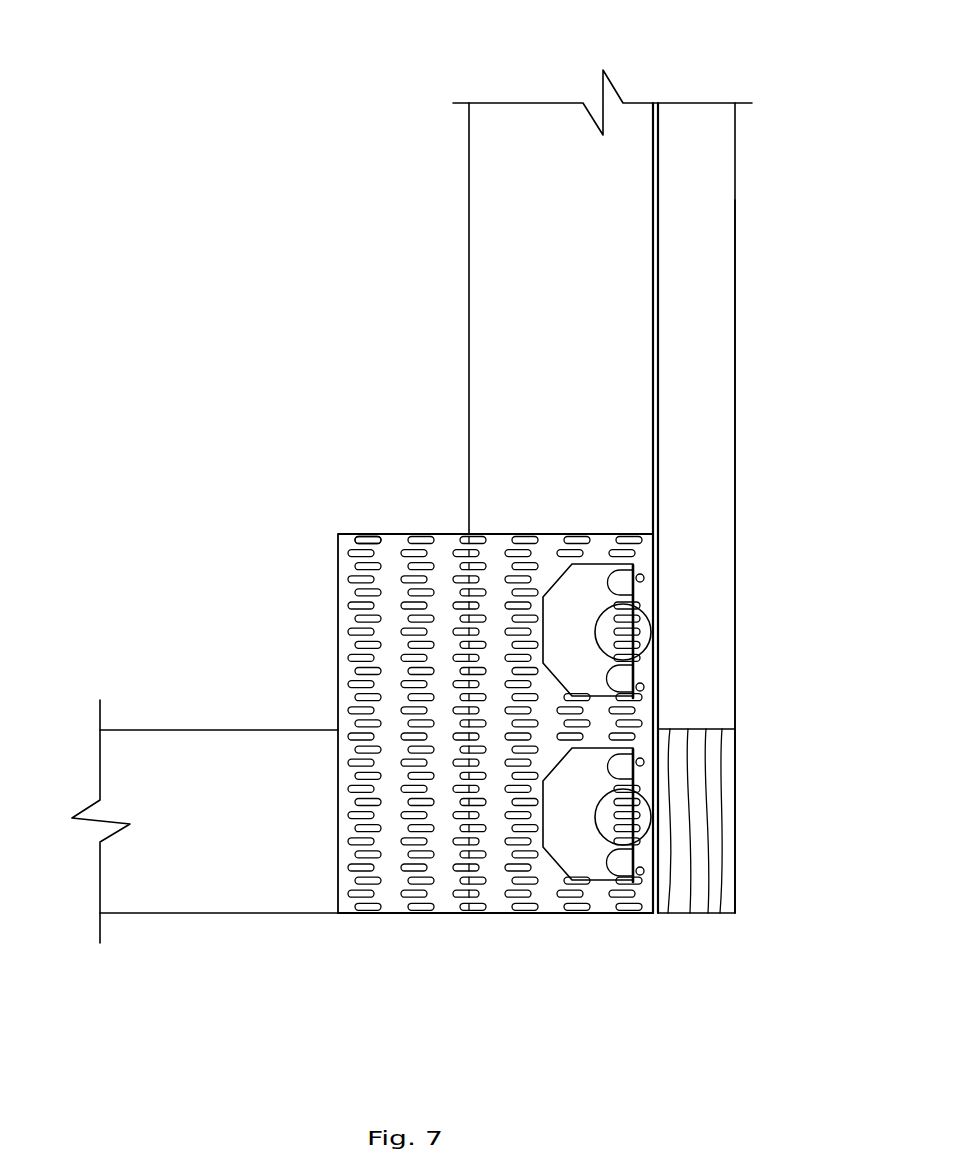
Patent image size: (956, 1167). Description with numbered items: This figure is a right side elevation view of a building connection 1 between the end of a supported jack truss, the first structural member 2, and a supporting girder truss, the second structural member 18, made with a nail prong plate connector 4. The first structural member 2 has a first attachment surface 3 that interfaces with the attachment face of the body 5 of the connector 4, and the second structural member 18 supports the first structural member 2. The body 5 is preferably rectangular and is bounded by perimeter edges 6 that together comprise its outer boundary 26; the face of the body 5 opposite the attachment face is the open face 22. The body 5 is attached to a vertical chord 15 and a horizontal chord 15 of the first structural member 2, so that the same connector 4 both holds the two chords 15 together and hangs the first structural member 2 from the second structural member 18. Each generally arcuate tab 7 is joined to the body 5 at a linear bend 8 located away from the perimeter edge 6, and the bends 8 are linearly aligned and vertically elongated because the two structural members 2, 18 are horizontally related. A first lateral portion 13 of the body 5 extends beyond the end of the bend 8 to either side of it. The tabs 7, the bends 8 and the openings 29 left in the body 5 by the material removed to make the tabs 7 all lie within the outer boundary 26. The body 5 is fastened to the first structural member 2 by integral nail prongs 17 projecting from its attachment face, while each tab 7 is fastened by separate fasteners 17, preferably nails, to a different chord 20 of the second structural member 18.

The building connection 1 is at (417, 469).
The first structural member 2 is at (491, 101).
The first attachment surface 3 is at (545, 124).
The nail prong plate connector 4 is at (346, 532).
The body 5 is at (370, 531).
The perimeter edge 6 is at (650, 533).
The first tab 7 is at (660, 740).
The first bend 8 is at (655, 667).
The first lateral portion 13 is at (660, 550).
The chord 15 is at (468, 215).
The integral nail prongs / separate fasteners 17 is at (655, 580).
The second structural member 18 is at (700, 101).
The chord 20 is at (737, 362).
The open face 22 is at (392, 905).
The outer boundary 26 is at (448, 913).
The opening 29 is at (545, 590).